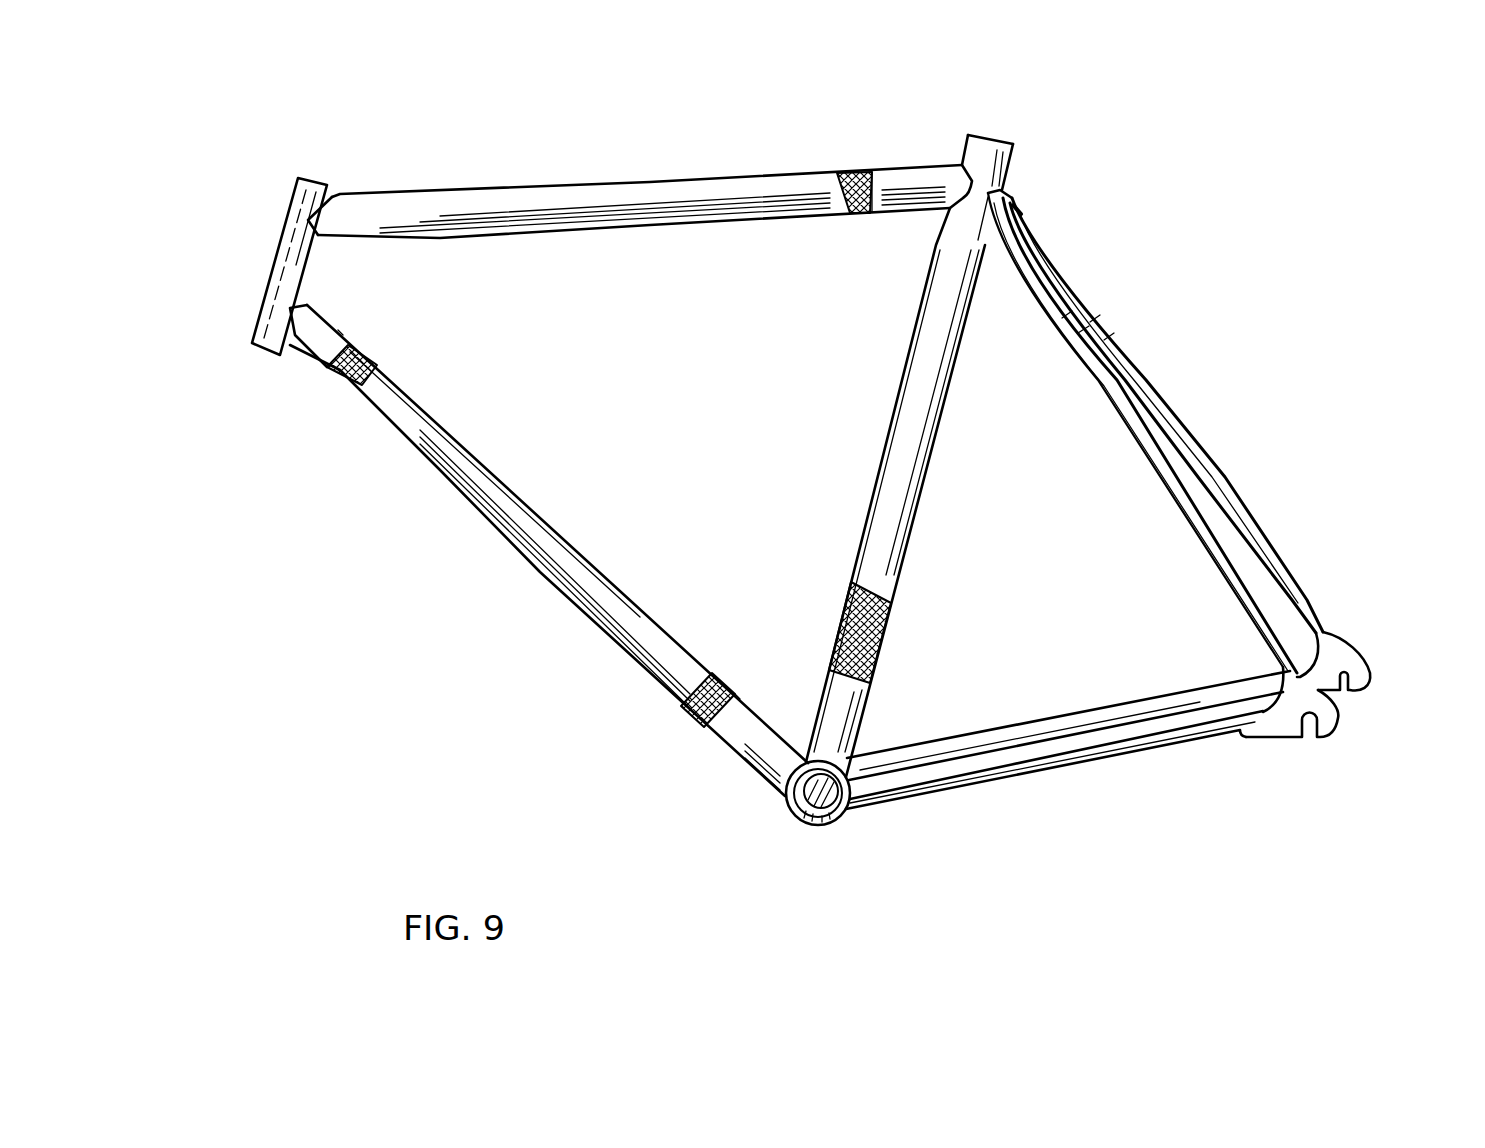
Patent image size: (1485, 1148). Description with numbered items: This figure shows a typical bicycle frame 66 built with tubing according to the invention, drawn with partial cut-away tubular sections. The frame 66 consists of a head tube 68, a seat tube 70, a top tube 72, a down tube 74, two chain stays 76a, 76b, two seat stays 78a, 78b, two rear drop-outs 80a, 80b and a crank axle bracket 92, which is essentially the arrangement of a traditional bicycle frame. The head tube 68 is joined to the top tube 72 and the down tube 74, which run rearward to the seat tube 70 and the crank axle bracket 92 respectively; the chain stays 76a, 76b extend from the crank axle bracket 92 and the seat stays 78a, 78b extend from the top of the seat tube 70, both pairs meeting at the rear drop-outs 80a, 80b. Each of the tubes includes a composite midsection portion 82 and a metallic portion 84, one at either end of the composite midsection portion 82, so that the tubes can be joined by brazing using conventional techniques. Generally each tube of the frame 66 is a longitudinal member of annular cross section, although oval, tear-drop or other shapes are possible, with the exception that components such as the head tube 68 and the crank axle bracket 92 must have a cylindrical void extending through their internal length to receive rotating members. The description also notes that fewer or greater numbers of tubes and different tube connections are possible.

The bicycle frame 66 is at (349, 551).
The head tube 68 is at (282, 262).
The seat tube 70 is at (907, 388).
The top tube 72 is at (432, 191).
The down tube 74 is at (495, 483).
The chain stay 76a is at (1187, 692).
The chain stay 76b is at (1193, 748).
The seat stay 78a is at (1150, 448).
The seat stay 78b is at (1153, 403).
The rear drop-out 80a is at (1337, 727).
The rear drop-out 80b is at (1353, 663).
The composite midsection portion 82 is at (852, 172).
The metallic portion 84 is at (893, 167).
The crank axle bracket 92 is at (797, 815).